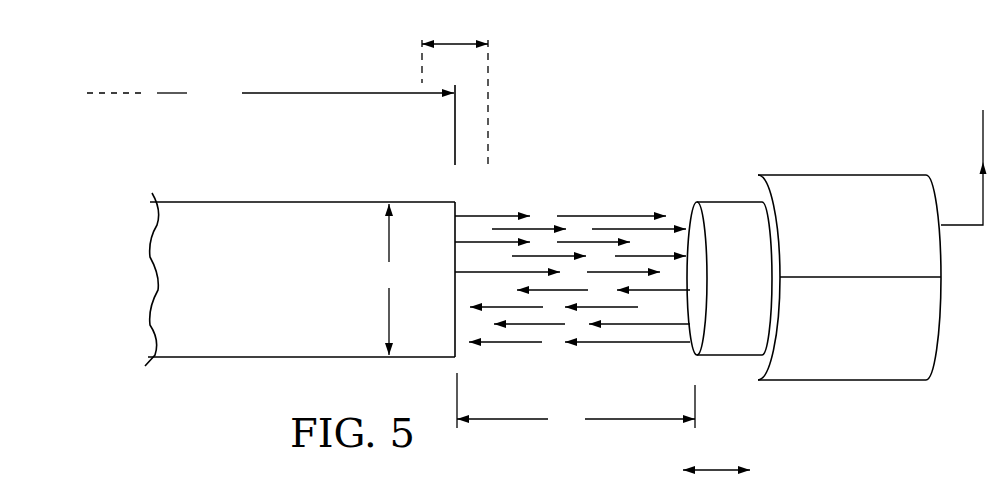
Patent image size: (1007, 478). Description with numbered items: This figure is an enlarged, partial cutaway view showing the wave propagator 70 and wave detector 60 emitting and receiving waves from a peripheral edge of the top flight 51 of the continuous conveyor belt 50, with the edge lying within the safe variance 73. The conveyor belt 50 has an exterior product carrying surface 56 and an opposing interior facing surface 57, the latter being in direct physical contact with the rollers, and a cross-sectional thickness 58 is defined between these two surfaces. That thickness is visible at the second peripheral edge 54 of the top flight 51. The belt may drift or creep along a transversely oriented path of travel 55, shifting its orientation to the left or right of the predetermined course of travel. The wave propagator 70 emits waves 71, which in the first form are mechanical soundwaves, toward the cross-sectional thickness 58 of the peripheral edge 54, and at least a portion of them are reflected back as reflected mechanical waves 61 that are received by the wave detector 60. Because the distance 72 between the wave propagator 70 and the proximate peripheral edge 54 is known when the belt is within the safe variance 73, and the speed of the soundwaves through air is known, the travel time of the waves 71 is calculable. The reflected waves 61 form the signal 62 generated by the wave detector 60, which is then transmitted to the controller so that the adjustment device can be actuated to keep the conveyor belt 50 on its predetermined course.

The continuous conveyor belt 50 is at (340, 261).
The top flight 51 is at (268, 290).
The second peripheral edge 54 is at (458, 206).
The transversely oriented path of travel 55 is at (270, 94).
The exterior product carrying surface 56 is at (297, 202).
The interior facing surface 57 is at (240, 357).
The cross-sectional thickness 58 is at (389, 279).
The wave detector 60 is at (838, 246).
The reflected mechanical waves 61 is at (542, 225).
The signal 62 is at (969, 157).
The wave propagator 70 is at (841, 334).
The emitted waves 71 is at (553, 325).
The distance 72 is at (576, 402).
The safe variance 73 is at (586, 247).